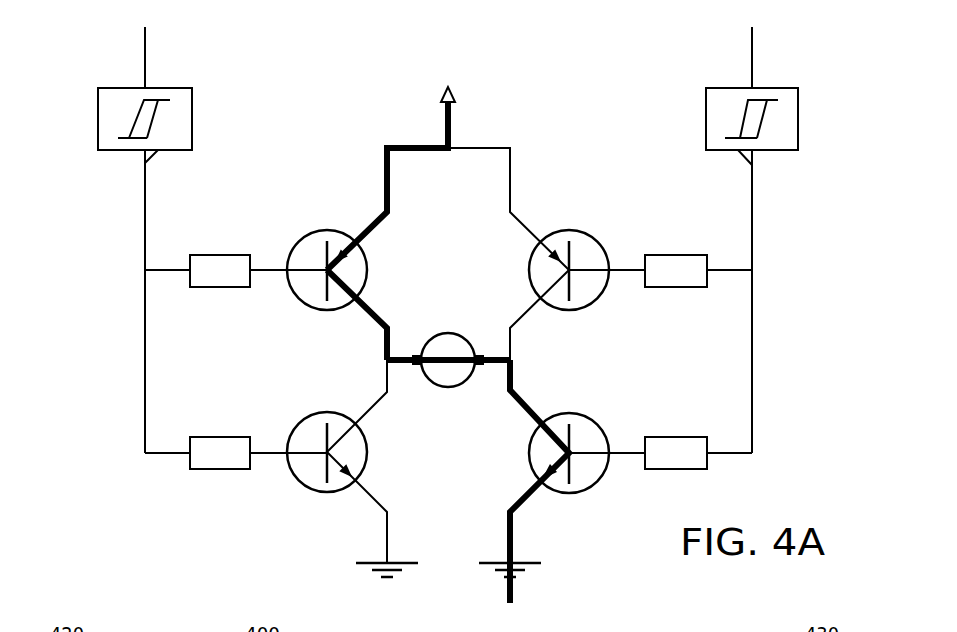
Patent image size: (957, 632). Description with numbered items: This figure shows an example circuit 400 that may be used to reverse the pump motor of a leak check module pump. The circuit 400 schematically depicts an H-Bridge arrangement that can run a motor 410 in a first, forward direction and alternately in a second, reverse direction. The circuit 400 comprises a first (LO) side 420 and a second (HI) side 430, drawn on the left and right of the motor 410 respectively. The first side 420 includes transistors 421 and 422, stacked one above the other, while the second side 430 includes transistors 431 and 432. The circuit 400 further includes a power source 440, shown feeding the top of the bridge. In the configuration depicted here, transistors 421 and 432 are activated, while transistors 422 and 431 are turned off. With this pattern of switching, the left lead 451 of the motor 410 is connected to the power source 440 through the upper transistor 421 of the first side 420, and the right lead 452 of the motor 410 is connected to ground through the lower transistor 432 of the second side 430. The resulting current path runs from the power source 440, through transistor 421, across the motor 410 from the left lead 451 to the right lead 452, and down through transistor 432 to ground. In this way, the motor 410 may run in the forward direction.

The circuit 400 is at (286, 62).
The motor 410 is at (441, 336).
The first (LO) side 420 is at (90, 66).
The transistor 421 is at (318, 236).
The transistor 422 is at (318, 418).
The second (HI) side 430 is at (799, 66).
The transistor 431 is at (588, 236).
The transistor 432 is at (590, 418).
The power source 440 is at (453, 96).
The left lead 451 is at (414, 366).
The right lead 452 is at (482, 366).